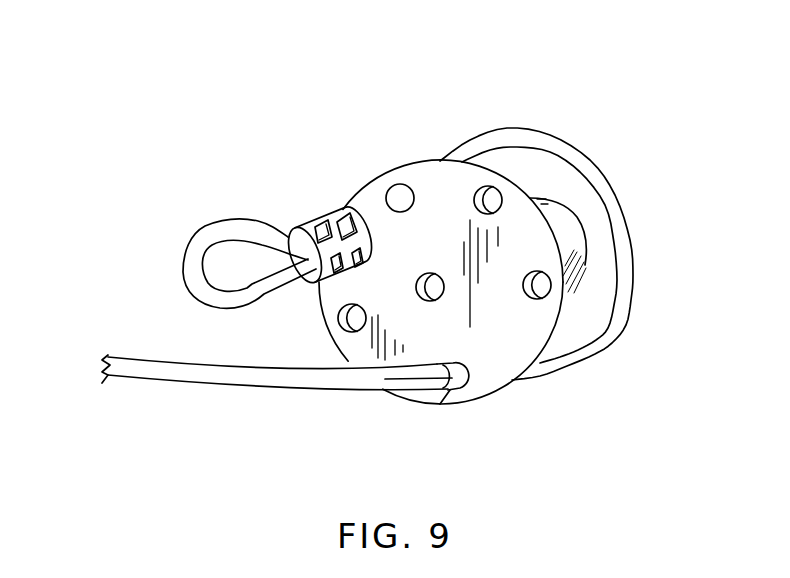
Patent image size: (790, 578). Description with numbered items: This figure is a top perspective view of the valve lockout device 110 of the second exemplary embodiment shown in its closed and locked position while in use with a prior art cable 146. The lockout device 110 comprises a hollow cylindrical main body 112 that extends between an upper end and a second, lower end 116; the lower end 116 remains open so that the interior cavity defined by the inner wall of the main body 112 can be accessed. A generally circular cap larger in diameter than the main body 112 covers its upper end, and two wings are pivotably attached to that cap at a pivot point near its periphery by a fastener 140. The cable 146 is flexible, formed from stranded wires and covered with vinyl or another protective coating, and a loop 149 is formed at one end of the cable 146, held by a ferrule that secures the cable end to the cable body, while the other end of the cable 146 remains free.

The valve lockout device 110 is at (602, 137).
The main body 112 is at (573, 247).
The lower end 116 is at (573, 210).
The fastener 140 is at (410, 195).
The cable 146 is at (544, 135).
The loop 149 is at (248, 222).